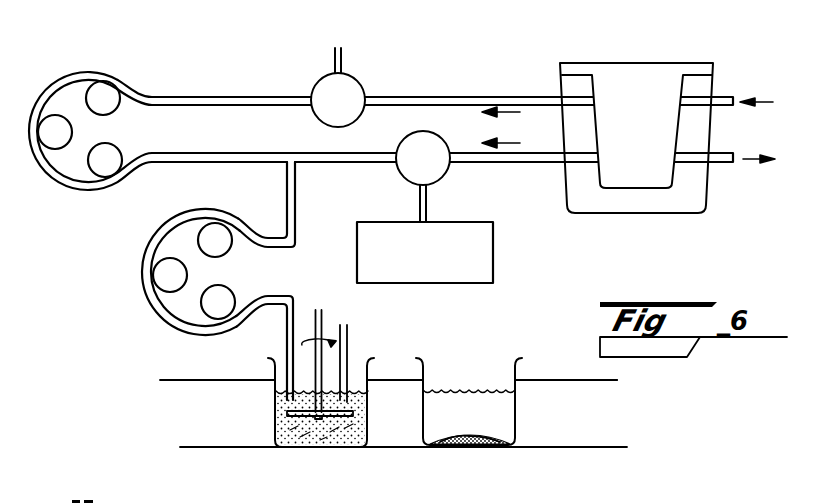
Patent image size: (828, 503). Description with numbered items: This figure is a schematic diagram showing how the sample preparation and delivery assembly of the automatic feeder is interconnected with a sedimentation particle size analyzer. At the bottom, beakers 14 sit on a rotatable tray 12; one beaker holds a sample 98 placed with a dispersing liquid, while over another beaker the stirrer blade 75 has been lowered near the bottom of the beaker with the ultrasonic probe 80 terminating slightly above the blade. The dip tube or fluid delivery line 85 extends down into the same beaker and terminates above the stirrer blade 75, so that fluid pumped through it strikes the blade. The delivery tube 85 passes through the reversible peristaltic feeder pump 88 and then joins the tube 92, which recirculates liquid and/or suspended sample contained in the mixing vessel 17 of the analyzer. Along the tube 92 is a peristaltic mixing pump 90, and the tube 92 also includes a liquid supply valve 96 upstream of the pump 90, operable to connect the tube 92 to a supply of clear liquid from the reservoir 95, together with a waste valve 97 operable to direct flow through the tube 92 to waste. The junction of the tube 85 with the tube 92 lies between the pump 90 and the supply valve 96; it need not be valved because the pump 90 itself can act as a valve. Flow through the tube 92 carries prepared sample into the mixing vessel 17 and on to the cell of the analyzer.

The rotatable tray 12 is at (558, 380).
The beakers 14 is at (519, 364).
The mixing vessel 17 is at (704, 197).
The stirrer blade 75 is at (283, 425).
The ultrasonic probe 80 is at (360, 349).
The fluid delivery line 85 is at (285, 199).
The reversible peristaltic feeder pump 88 is at (176, 294).
The peristaltic mixing pump 90 is at (60, 158).
The recirculation tube 92 is at (206, 93).
The reservoir 95 is at (494, 247).
The liquid supply valve 96 is at (410, 190).
The waste valve 97 is at (362, 78).
The samples 98 is at (477, 445).